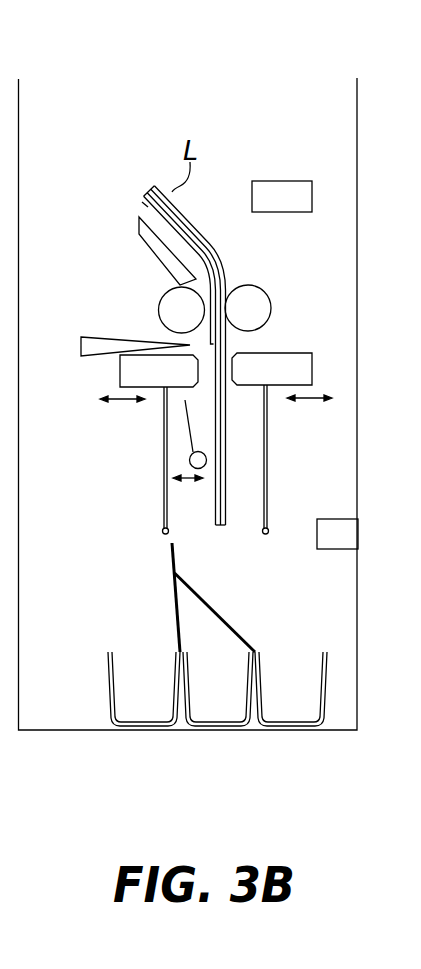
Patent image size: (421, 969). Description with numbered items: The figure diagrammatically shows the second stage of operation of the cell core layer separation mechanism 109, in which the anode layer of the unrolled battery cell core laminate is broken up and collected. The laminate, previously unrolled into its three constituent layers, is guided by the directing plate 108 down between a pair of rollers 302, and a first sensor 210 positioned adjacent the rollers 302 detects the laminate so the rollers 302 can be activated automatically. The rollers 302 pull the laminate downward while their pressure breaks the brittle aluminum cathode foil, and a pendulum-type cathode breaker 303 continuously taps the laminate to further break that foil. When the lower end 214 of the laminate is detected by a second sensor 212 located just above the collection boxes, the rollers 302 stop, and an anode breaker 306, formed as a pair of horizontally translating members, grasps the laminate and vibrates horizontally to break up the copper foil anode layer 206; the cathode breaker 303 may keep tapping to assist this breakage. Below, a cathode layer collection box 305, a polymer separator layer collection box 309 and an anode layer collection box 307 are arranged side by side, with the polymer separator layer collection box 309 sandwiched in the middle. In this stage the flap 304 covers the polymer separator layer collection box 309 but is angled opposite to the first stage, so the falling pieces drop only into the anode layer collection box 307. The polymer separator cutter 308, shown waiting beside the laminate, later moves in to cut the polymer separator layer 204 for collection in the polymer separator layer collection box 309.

The cell core layer separation mechanism 109 is at (152, 88).
The first sensor 210 is at (284, 181).
The directing plate 108 is at (138, 220).
The rollers 302 is at (160, 298).
The polymer separator cutter 308 is at (80, 337).
The anode breaker 306 is at (120, 371).
The cathode breaker 303 is at (188, 458).
The anode layer 206 is at (222, 450).
The second sensor 212 is at (317, 535).
The polymer separator layer 204 is at (215, 497).
The lower end 214 is at (226, 525).
The flap 304 is at (172, 598).
The cathode layer collection box 305 is at (130, 738).
The polymer separator layer collection box 309 is at (207, 738).
The anode layer collection box 307 is at (293, 738).